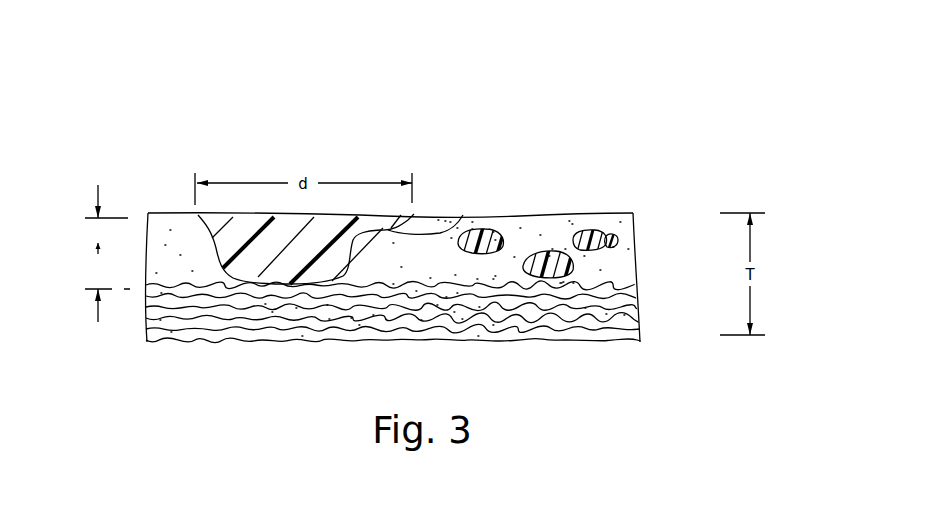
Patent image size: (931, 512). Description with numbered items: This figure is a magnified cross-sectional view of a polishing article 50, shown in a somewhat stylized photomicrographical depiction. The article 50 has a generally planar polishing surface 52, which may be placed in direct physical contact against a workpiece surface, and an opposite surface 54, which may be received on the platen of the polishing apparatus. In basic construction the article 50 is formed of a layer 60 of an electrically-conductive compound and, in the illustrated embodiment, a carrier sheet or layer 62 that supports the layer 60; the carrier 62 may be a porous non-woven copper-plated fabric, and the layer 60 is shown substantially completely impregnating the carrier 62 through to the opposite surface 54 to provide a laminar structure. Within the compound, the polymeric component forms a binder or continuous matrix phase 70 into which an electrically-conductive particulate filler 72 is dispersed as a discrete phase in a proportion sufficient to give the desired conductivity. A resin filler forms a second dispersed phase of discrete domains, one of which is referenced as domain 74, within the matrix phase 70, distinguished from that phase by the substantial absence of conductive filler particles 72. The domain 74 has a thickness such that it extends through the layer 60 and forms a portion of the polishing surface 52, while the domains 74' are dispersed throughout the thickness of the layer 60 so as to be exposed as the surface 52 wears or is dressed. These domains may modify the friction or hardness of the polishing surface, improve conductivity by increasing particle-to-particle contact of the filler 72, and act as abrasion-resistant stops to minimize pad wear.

The polishing article 50 is at (692, 76).
The polishing surface 52 is at (432, 217).
The opposite surface 54 is at (215, 330).
The layer of electrically-conductive compound 60 is at (631, 227).
The carrier sheet or layer 62 is at (637, 311).
The matrix phase 70 is at (617, 267).
The electrically-conductive particulate filler 72 is at (579, 218).
The resin filler domain 74 is at (449, 173).
The resin filler domains 74' is at (566, 257).